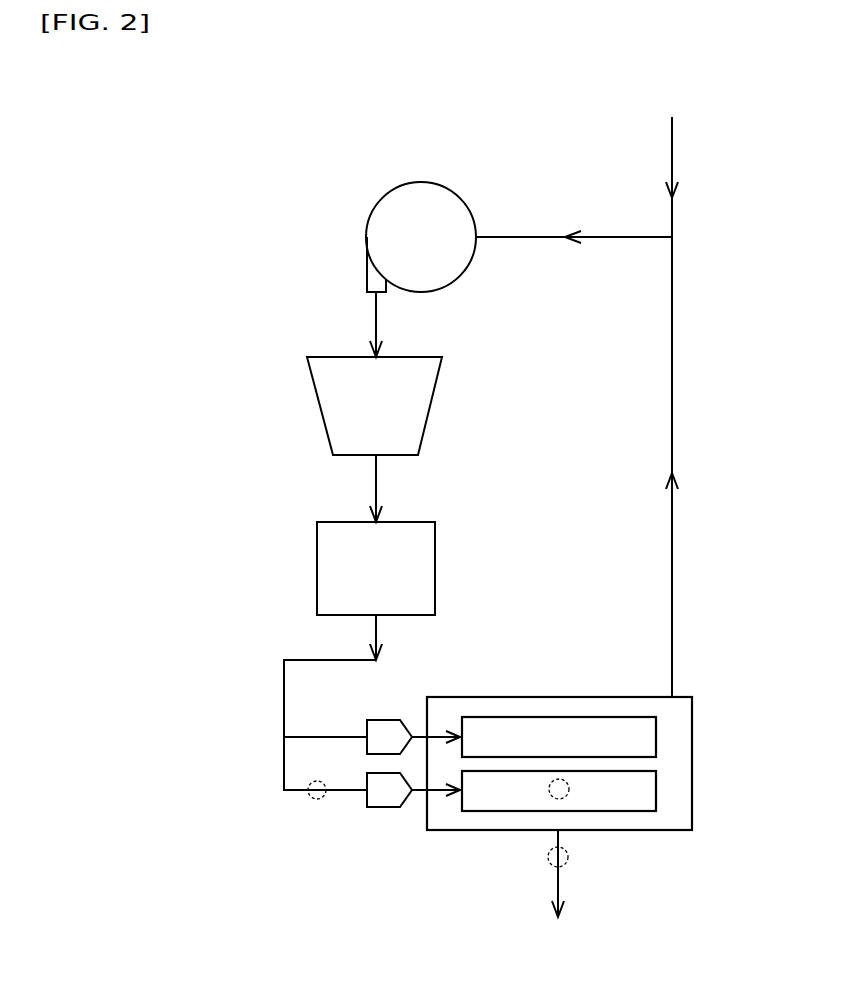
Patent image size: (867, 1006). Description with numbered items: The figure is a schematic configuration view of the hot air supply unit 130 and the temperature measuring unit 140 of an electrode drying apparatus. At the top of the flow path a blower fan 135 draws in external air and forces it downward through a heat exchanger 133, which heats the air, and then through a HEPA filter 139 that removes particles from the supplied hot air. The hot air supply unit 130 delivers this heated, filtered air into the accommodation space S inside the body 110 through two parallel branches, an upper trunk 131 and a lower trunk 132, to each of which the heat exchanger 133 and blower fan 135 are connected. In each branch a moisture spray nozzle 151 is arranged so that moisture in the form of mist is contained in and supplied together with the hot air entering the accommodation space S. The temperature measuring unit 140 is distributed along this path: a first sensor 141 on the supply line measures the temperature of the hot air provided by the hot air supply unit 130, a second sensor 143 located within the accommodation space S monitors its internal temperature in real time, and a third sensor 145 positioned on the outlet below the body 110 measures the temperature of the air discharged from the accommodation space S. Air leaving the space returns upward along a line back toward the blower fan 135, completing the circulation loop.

The body 110 is at (692, 705).
The hot air supply unit 130 is at (660, 820).
The upper trunk 131 is at (656, 733).
The lower trunk 132 is at (656, 790).
The heat exchanger 133 is at (320, 408).
The blower fan 135 is at (385, 198).
The HEPA filter 139 is at (317, 566).
The temperature measuring unit 140 is at (303, 793).
The first sensor 141 is at (314, 800).
The second sensor 143 is at (552, 797).
The third sensor 145 is at (569, 855).
The moisture spray nozzle 151 is at (390, 718).
The accommodation space S is at (583, 708).